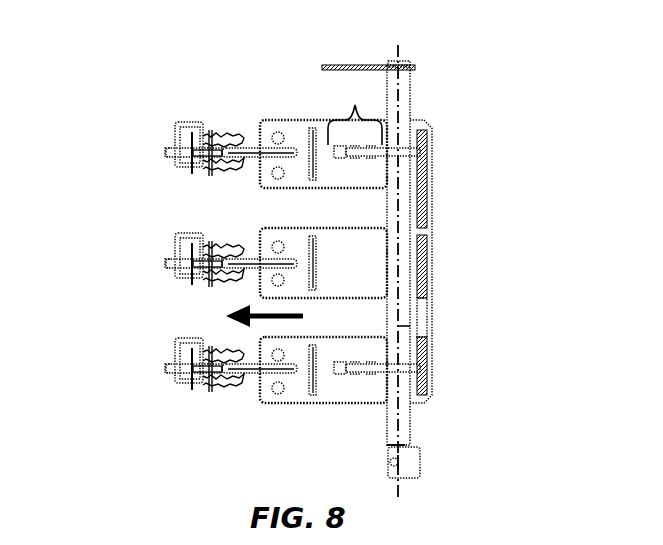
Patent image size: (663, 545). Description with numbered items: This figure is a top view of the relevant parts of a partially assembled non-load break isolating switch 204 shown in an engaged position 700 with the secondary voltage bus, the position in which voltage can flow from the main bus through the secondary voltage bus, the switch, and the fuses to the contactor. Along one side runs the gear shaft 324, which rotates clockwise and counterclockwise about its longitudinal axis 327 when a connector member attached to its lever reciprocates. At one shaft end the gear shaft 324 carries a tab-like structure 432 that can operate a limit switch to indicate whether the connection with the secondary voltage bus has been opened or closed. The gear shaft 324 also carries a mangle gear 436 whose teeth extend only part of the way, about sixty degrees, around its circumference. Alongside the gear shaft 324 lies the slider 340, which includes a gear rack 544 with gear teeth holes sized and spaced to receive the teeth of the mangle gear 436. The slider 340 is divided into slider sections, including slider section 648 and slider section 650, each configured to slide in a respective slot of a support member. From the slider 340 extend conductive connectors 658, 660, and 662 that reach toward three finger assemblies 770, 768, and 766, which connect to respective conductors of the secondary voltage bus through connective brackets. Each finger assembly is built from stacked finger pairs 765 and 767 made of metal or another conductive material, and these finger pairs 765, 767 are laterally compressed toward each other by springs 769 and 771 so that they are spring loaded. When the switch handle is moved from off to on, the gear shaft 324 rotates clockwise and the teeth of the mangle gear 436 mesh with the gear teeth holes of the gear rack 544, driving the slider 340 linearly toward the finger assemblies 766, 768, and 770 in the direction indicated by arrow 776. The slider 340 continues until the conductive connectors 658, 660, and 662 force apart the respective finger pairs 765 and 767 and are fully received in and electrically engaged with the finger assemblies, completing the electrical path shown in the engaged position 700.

The engaged position 700 is at (460, 60).
The gear shaft 324 is at (407, 83).
The slider 340 is at (428, 235).
The longitudinal axis 327 is at (410, 326).
The tab-like structure 432 is at (422, 458).
The mangle gear 436 is at (390, 153).
The gear rack 544 is at (355, 105).
The slider section 648 is at (374, 267).
The slider section 650 is at (347, 405).
The conductive connector 658 is at (247, 147).
The conductive connector 660 is at (250, 257).
The conductive connector 662 is at (250, 375).
The finger assembly 770 is at (141, 149).
The finger assembly 768 is at (150, 252).
The finger assembly 766 is at (141, 366).
The spring 771 is at (213, 140).
The spring 769 is at (217, 172).
The finger pair 767 is at (232, 357).
The finger pair 765 is at (232, 385).
The non-load break isolating switch 204 is at (198, 438).
The arrow 776 is at (296, 312).